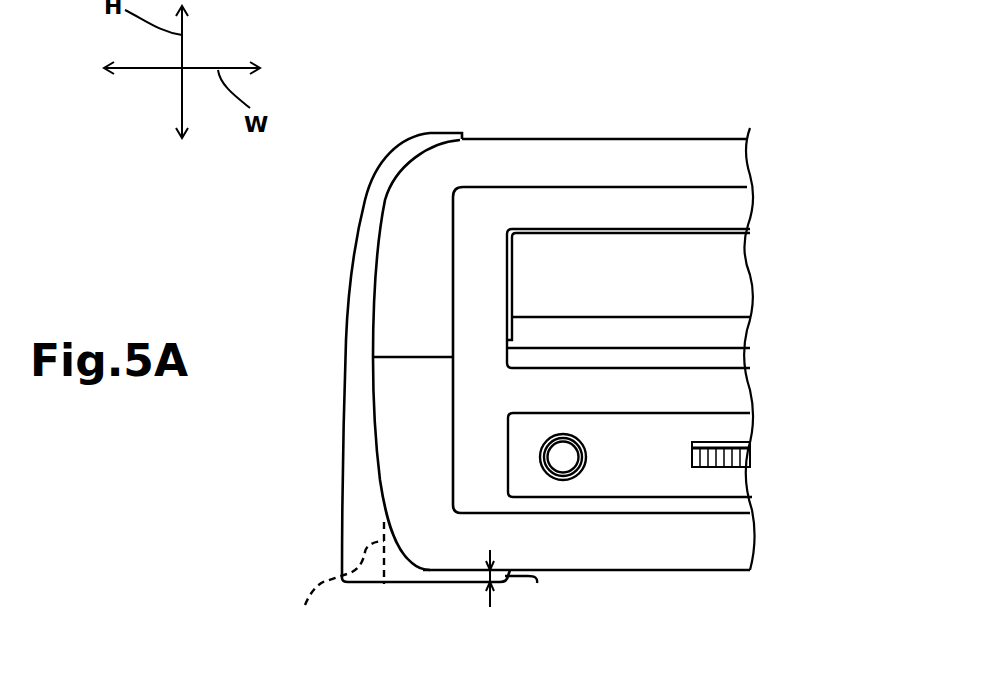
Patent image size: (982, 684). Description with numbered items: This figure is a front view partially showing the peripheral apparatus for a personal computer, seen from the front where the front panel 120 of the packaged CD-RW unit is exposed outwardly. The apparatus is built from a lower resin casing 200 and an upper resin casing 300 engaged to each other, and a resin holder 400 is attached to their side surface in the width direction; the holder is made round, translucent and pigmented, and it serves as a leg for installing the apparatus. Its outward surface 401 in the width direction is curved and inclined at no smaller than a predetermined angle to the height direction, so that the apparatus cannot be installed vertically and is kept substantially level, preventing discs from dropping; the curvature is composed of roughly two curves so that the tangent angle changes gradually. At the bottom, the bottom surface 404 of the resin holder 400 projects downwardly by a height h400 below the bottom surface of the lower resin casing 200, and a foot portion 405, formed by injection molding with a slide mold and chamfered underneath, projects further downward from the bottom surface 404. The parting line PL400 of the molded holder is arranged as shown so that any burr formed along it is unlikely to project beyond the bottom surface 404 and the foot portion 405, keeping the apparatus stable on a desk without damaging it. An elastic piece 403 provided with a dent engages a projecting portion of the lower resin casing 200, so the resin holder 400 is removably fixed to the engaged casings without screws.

The upper resin casing 300 is at (530, 145).
The front panel 120 is at (612, 205).
The outward surface 401 is at (348, 310).
The resin holder 400 is at (353, 492).
The bottom surface 404 is at (435, 586).
The lower resin casing 200 is at (714, 574).
The elastic piece 403 is at (522, 580).
The foot portion 405 is at (384, 586).
The parting line PL400 is at (334, 589).
The height of bottom surface projection h400 is at (500, 594).